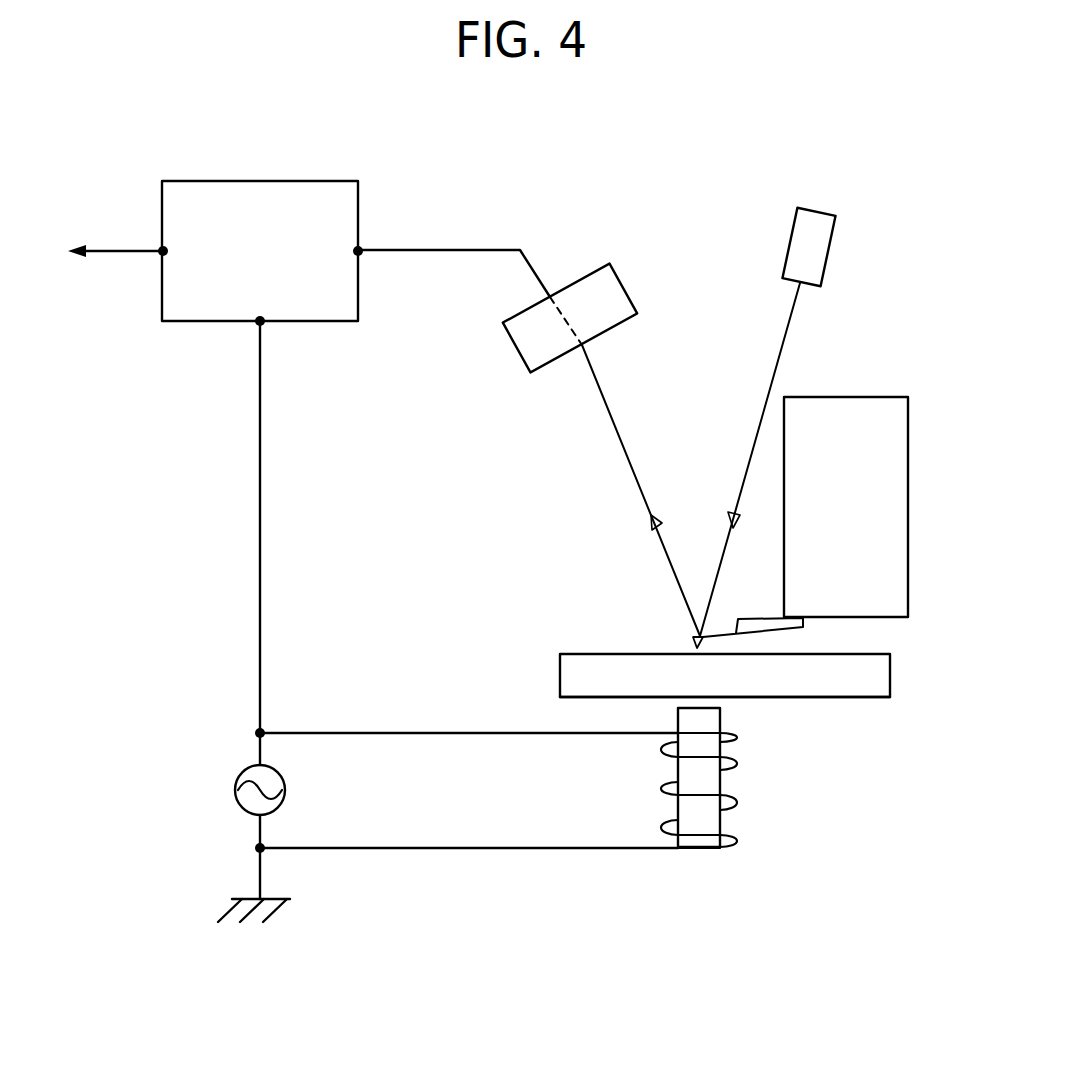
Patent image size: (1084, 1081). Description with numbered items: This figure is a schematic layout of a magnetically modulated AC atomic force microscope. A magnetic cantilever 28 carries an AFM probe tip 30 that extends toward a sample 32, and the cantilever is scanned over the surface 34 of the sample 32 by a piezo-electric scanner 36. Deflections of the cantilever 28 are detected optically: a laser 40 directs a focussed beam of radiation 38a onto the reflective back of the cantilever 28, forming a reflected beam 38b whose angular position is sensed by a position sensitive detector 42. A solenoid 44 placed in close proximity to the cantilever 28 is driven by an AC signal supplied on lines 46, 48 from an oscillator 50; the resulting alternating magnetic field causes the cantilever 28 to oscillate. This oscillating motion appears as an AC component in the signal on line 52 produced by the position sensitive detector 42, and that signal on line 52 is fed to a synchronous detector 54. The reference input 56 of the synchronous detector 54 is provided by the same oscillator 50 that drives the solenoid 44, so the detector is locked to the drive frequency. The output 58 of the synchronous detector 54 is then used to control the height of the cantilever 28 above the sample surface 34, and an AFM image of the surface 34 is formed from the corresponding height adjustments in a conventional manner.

The magnetic cantilever 28 is at (716, 627).
The AFM probe tip 30 is at (693, 644).
The sample 32 is at (862, 683).
The sample surface 34 is at (570, 653).
The piezo-electric scanner 36 is at (892, 408).
The focussed beam of radiation 38a is at (762, 410).
The reflected beam 38b is at (617, 433).
The laser 40 is at (813, 222).
The position sensitive detector 42 is at (524, 338).
The solenoid 44 is at (722, 825).
The line 46 is at (420, 733).
The line 48 is at (487, 848).
The oscillator 50 is at (235, 792).
The line 52 is at (453, 250).
The synchronous detector 54 is at (207, 303).
The reference input 56 is at (260, 322).
The output 58 is at (162, 253).